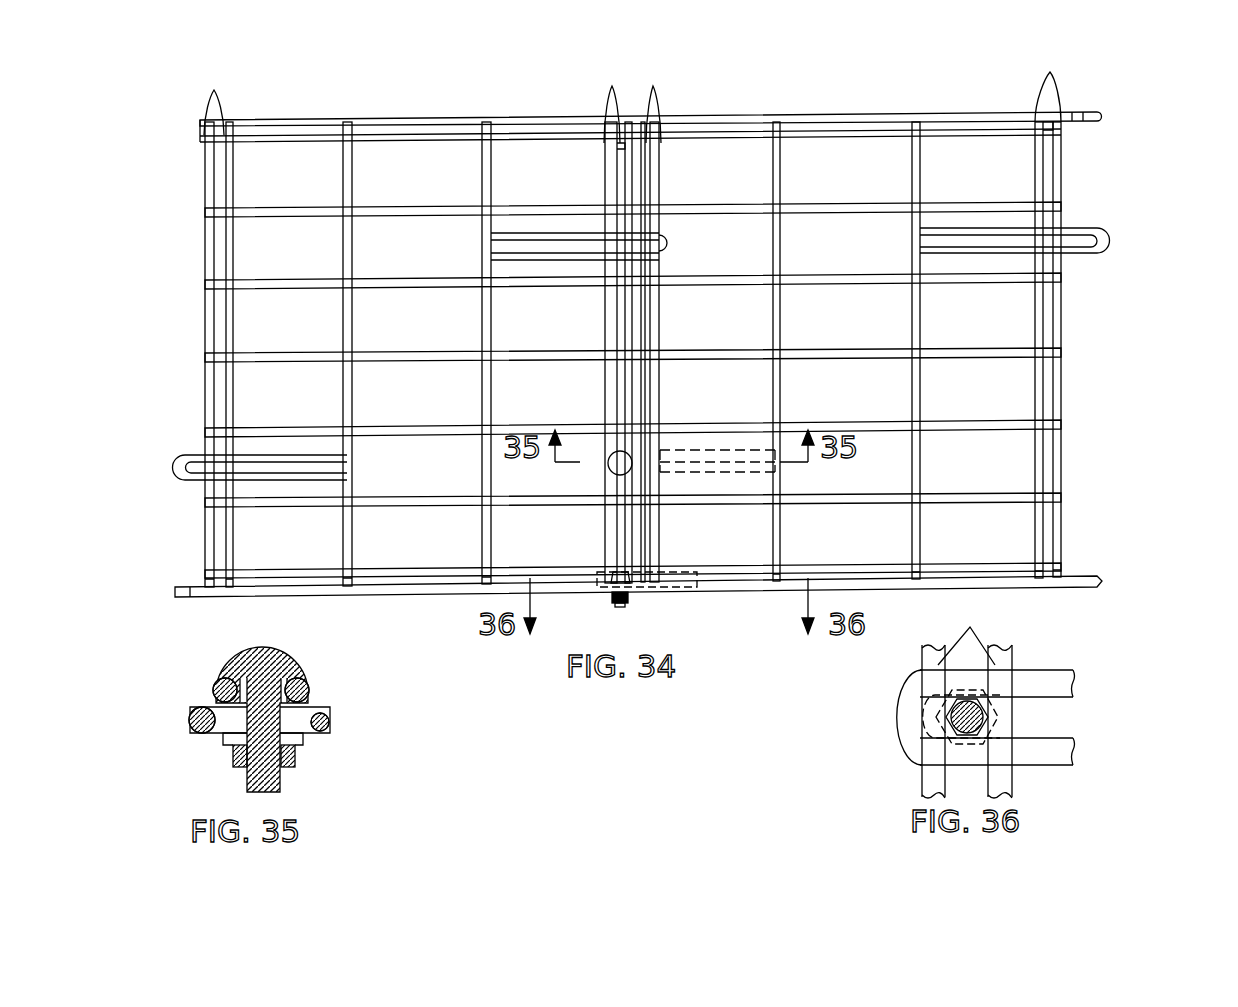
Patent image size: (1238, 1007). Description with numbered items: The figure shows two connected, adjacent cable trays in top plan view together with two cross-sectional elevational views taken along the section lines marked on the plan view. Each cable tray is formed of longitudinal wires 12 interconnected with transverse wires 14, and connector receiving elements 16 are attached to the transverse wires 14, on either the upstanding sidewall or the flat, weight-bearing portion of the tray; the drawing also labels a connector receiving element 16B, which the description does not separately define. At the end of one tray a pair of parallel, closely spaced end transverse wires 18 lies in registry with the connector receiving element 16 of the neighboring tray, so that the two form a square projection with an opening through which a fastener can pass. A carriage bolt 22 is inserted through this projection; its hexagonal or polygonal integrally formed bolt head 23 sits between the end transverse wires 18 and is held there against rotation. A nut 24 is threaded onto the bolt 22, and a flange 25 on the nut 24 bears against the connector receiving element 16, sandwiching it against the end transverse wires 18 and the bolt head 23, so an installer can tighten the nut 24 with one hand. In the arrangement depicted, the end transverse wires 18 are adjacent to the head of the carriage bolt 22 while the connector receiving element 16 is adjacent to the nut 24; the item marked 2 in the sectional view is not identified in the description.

In FIG. 36, the bolt 2 is at (990, 716).
In FIG. 34, the longitudinal wires 12 is at (280, 127).
In FIG. 34, the transverse wires 14 is at (488, 167).
In FIG. 35, the connector receiving element 16 is at (225, 722).
In FIG. 36, the connector receiving element 16 is at (1043, 677).
In FIG. 34, the tubular brace 16B is at (547, 237).
In FIG. 34, the end transverse wires 18 is at (635, 332).
In FIG. 35, the end transverse wires 18 is at (213, 688).
In FIG. 34, the carriage bolt 22 is at (612, 574).
In FIG. 35, the carriage bolt 22 is at (247, 670).
In FIG. 35, the bolt head 23 is at (312, 696).
In FIG. 34, the nut 24 is at (616, 600).
In FIG. 35, the nut 24 is at (297, 762).
In FIG. 36, the nut 24 is at (968, 750).
In FIG. 35, the flange 25 is at (305, 737).